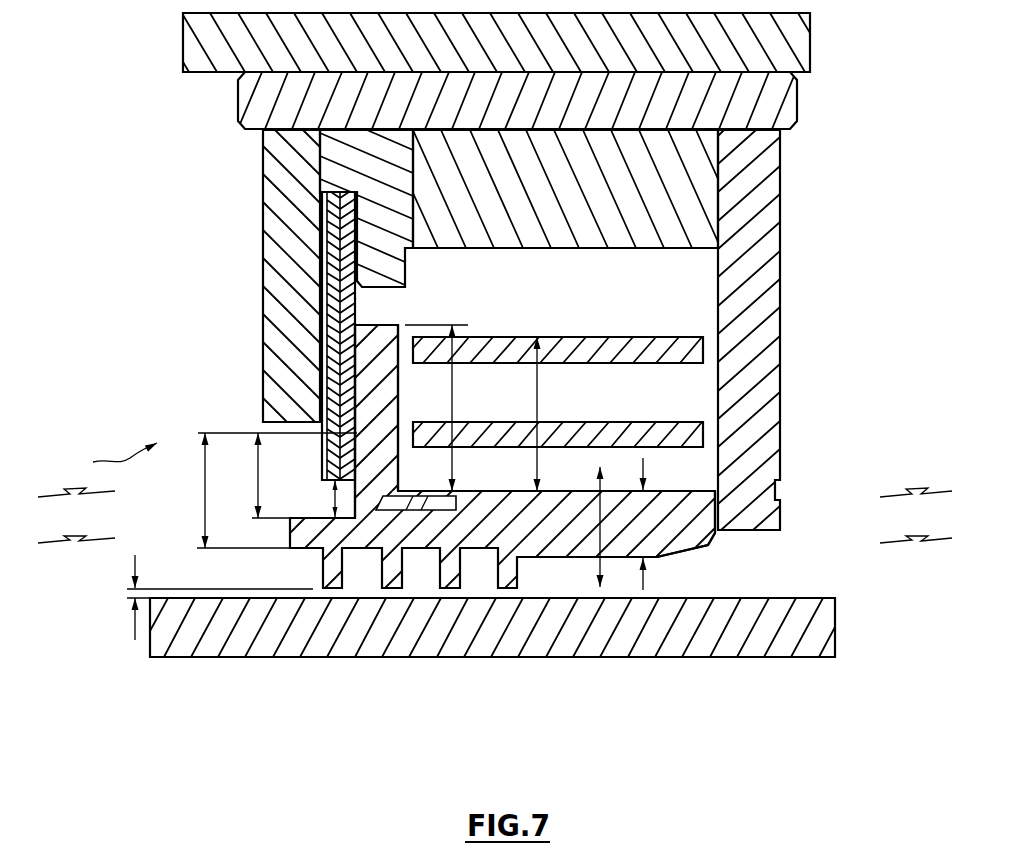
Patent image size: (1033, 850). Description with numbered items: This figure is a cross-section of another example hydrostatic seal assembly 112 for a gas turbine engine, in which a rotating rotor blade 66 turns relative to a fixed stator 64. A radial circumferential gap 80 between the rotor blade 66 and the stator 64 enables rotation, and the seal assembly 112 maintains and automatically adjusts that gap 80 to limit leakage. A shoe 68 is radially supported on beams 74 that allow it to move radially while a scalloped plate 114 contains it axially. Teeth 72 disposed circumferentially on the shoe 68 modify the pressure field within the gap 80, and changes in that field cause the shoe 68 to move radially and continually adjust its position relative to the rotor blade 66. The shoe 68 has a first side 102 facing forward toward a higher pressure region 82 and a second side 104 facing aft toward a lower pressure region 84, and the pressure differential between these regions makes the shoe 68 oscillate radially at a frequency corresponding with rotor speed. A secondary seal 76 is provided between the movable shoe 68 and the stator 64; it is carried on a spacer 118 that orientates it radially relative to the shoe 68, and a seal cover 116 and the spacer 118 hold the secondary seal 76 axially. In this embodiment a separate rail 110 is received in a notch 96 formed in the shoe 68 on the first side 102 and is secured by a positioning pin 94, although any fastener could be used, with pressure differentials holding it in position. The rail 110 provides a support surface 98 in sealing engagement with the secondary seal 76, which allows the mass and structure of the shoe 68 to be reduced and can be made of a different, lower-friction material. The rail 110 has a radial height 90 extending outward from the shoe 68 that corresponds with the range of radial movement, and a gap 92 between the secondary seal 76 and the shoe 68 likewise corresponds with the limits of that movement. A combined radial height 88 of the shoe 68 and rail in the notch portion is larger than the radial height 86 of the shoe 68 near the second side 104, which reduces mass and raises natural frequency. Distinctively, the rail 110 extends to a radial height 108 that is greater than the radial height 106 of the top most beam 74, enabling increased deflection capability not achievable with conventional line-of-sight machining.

The stator 64 is at (797, 99).
The rotor blade 66 is at (328, 640).
The shoe 68 is at (572, 528).
The teeth 72 is at (433, 577).
The beams 74 is at (615, 427).
The secondary seal 76 is at (370, 457).
The gap 80 is at (133, 636).
The higher pressure region 82 is at (95, 528).
The lower pressure region 84 is at (932, 528).
The radial height 86 is at (645, 583).
The combined radial height 88 is at (205, 497).
The radial height 90 is at (258, 470).
The gap 92 is at (337, 498).
The positioning pin 94 is at (420, 503).
The notch 96 is at (318, 515).
The support surface 98 is at (333, 466).
The first side 102 is at (288, 552).
The second side 104 is at (727, 539).
The radial height 106 is at (537, 401).
The radial height 108 is at (452, 401).
The rail 110 is at (340, 393).
The seal assembly 112 is at (102, 459).
The scalloped plate 114 is at (745, 308).
The seal cover 116 is at (287, 236).
The spacer 118 is at (272, 313).